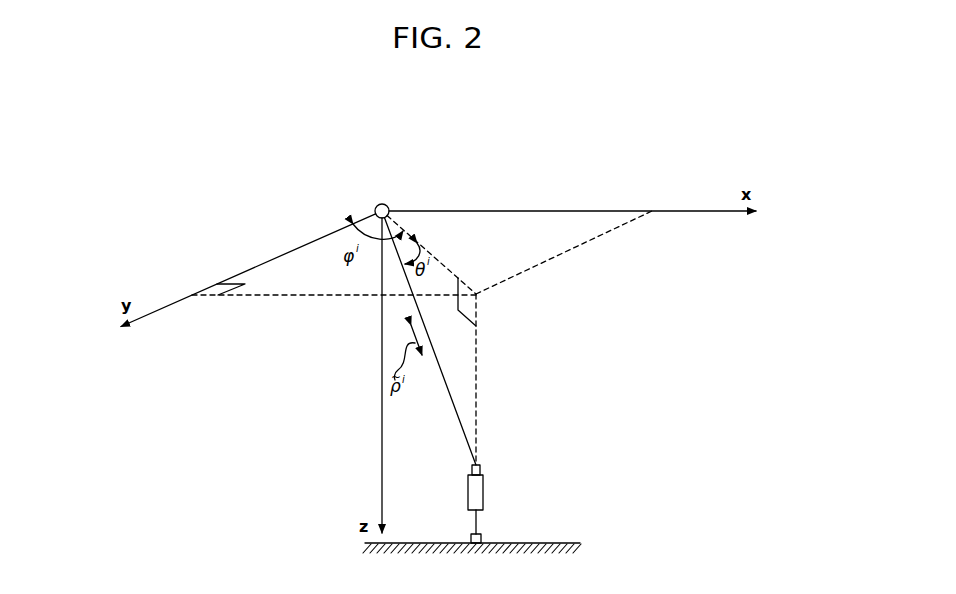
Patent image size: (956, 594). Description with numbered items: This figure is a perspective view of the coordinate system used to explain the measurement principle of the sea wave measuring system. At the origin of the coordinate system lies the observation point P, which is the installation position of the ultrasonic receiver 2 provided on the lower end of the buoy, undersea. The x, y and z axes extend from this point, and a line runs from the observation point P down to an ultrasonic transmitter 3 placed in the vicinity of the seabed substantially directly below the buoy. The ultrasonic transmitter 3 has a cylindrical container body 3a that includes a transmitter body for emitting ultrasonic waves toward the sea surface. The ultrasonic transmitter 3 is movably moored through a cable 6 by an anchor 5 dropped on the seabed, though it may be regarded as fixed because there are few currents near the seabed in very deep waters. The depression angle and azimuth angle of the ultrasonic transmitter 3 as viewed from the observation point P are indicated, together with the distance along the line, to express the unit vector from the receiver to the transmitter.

The ultrasonic receiver 2 is at (388, 205).
The ultrasonic transmitter 3 is at (489, 470).
The cylindrical container body 3a is at (485, 492).
The cable 6 is at (478, 522).
The anchor 5 is at (483, 538).